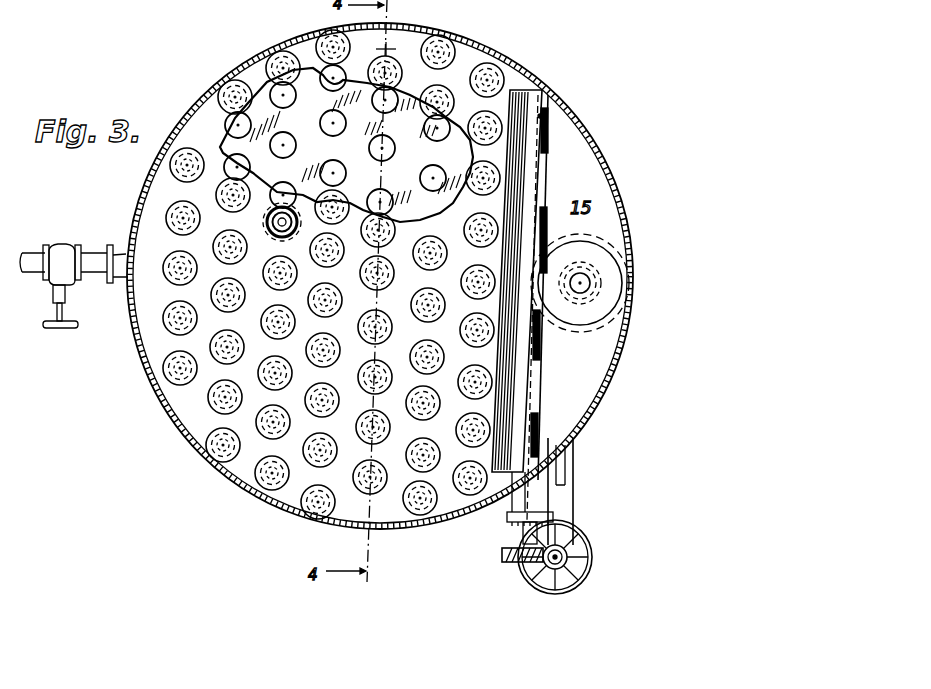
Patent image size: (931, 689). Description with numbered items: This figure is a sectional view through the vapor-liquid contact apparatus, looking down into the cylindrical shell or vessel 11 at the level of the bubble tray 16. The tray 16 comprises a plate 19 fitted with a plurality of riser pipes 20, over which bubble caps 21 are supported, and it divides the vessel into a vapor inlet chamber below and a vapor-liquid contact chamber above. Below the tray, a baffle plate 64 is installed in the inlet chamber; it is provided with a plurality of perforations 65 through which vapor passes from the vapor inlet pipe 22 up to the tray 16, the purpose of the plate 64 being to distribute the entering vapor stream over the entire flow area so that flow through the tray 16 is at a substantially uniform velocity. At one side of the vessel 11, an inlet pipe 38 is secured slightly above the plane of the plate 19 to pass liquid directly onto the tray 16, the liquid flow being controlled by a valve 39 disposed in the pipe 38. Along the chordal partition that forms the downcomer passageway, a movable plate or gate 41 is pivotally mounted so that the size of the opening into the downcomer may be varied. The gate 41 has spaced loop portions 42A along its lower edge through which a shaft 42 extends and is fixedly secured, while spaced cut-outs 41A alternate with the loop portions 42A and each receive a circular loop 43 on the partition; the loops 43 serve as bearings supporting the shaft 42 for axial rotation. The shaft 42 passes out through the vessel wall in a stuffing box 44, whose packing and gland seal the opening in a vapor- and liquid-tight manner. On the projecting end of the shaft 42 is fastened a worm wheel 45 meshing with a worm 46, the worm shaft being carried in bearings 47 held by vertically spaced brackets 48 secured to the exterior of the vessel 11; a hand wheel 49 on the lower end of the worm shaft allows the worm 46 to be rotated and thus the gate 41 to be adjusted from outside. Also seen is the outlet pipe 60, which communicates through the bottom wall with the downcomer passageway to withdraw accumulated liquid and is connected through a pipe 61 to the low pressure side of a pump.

The cylindrical shell or vessel 11 is at (232, 72).
The bubble tray 16 is at (463, 66).
The plate 19 is at (162, 188).
The riser pipes 20 is at (267, 222).
The bubble caps 21 is at (268, 241).
The vapor inlet pipe 22 is at (372, 280).
The inlet pipe 38 is at (93, 276).
The valve 39 is at (76, 246).
The movable plate or gate 41 is at (497, 355).
The cut-outs 41A is at (540, 116).
The shaft 42 is at (550, 187).
The loop portions 42A is at (543, 175).
The circular loops 43 is at (548, 125).
The stuffing box 44 is at (510, 508).
The worm wheel 45 is at (502, 560).
The worm 46 is at (575, 557).
The bearings 47 is at (578, 575).
The brackets 48 is at (572, 487).
The hand wheel 49 is at (560, 596).
The outlet pipe 60 is at (608, 322).
The pipe 61 is at (593, 273).
The baffle plate 64 is at (233, 136).
The perforations 65 is at (372, 102).